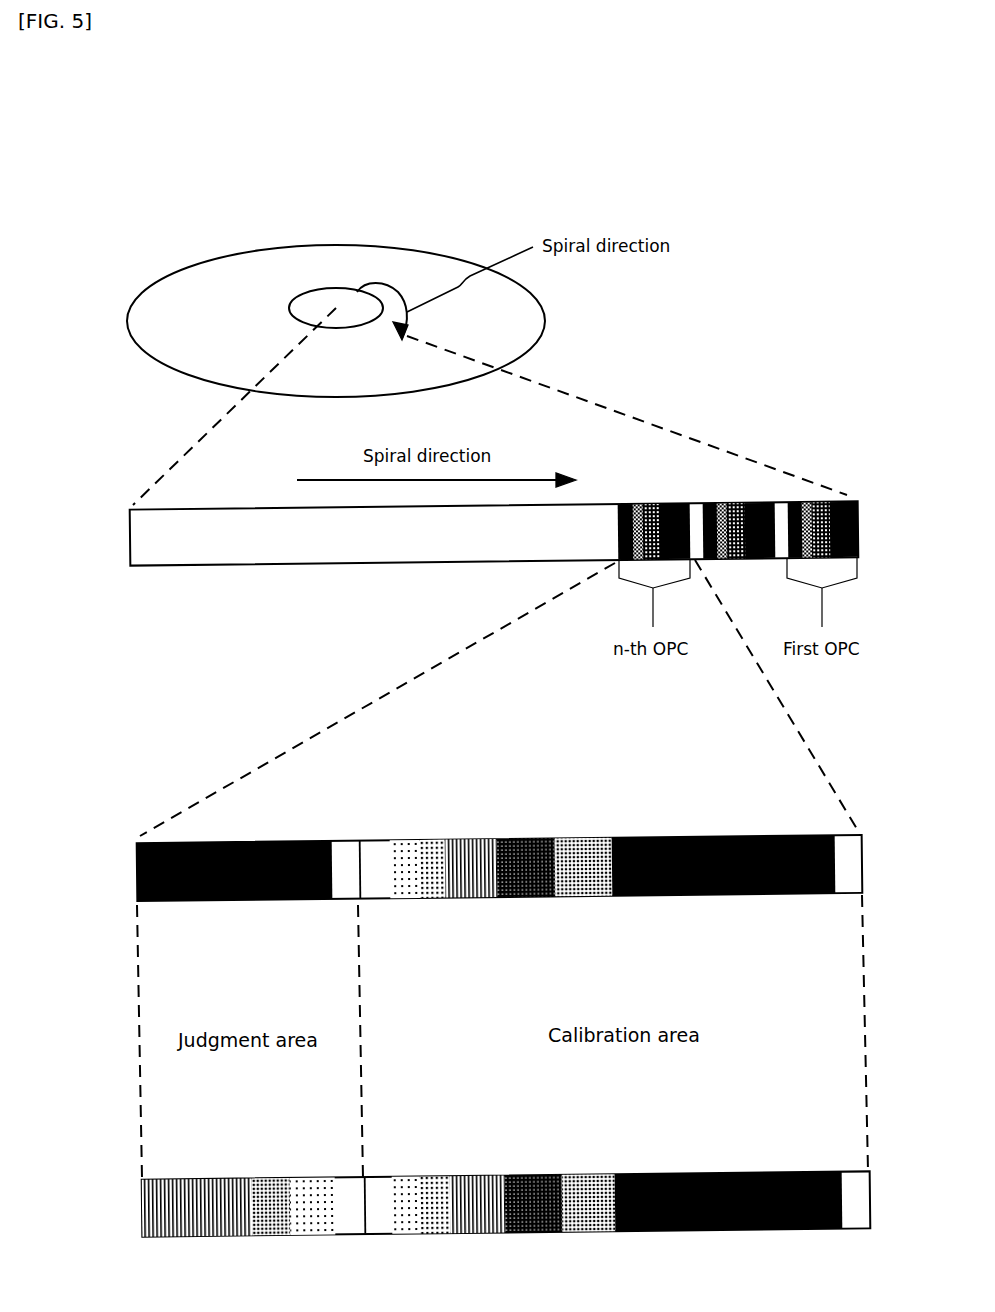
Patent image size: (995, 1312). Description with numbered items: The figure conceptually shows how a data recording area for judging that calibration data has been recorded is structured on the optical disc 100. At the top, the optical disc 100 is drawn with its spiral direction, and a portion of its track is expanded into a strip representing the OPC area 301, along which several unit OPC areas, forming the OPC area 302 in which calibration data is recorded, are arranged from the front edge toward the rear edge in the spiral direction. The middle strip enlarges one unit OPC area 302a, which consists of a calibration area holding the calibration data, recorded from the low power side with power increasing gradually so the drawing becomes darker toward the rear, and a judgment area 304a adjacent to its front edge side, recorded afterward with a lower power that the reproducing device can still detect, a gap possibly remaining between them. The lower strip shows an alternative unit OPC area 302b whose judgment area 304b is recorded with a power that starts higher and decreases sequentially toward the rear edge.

The optical disc 100 is at (337, 243).
The OPC area 301 is at (130, 540).
The OPC area with calibration data recorded 302 is at (667, 503).
The unit OPC area 302a is at (447, 849).
The unit OPC area 302b is at (454, 1185).
The judgment area 304a is at (252, 839).
The judgment area 304b is at (255, 1176).